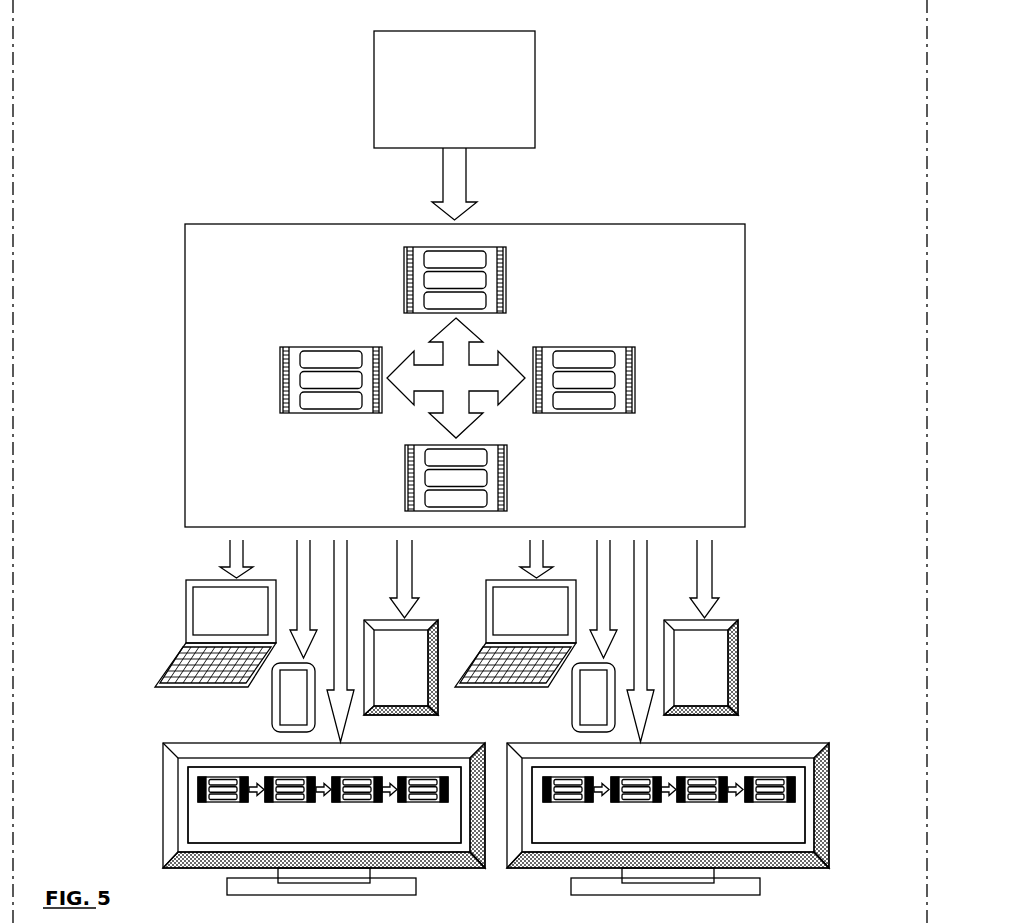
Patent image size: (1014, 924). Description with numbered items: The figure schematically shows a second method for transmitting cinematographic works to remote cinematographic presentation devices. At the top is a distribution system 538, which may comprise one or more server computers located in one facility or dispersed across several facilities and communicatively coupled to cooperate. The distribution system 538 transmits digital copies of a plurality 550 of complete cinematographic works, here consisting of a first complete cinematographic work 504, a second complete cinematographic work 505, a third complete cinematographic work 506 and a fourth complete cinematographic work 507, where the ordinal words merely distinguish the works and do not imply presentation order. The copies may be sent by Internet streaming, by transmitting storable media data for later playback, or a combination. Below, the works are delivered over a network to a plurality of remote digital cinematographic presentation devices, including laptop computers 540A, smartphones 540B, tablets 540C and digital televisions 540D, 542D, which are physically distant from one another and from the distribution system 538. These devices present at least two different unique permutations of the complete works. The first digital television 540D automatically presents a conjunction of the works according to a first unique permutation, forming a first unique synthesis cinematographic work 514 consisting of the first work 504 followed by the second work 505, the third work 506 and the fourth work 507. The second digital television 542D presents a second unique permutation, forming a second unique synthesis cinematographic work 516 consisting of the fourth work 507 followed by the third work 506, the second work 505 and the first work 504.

The distribution system 538 is at (439, 126).
The plurality of complete cinematographic works 550 is at (745, 258).
The first complete cinematographic work 504 is at (404, 297).
The second complete cinematographic work 505 is at (280, 360).
The third complete cinematographic work 506 is at (508, 473).
The fourth complete cinematographic work 507 is at (635, 358).
The laptop computers 540A is at (208, 617).
The smartphones 540B is at (272, 700).
The tablets 540C is at (425, 677).
The first digital television 540D is at (163, 810).
The second digital television 542D is at (830, 813).
The first unique synthesis cinematographic work 514 is at (188, 832).
The second unique synthesis cinematographic work 516 is at (805, 823).